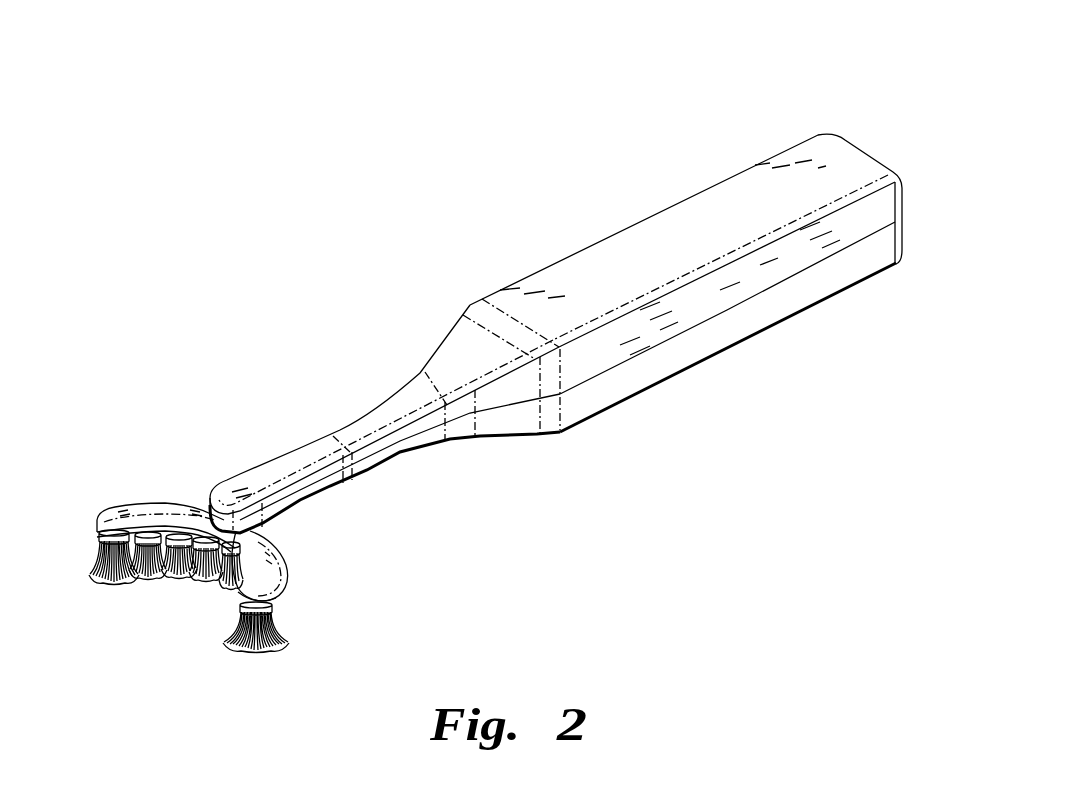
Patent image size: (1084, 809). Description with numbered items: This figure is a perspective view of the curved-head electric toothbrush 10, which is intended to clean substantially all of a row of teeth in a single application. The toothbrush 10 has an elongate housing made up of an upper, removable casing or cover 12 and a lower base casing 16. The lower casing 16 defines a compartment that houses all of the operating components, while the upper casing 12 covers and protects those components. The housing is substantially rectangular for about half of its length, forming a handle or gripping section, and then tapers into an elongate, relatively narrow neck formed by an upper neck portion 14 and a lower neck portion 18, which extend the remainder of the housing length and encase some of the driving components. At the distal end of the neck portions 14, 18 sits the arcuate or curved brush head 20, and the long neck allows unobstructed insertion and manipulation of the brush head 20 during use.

The curved-head electric toothbrush 10 is at (537, 96).
The upper casing 12 is at (710, 197).
The upper neck portion 14 is at (363, 421).
The lower casing 16 is at (740, 333).
The lower neck portion 18 is at (361, 476).
The curved brush head 20 is at (146, 458).